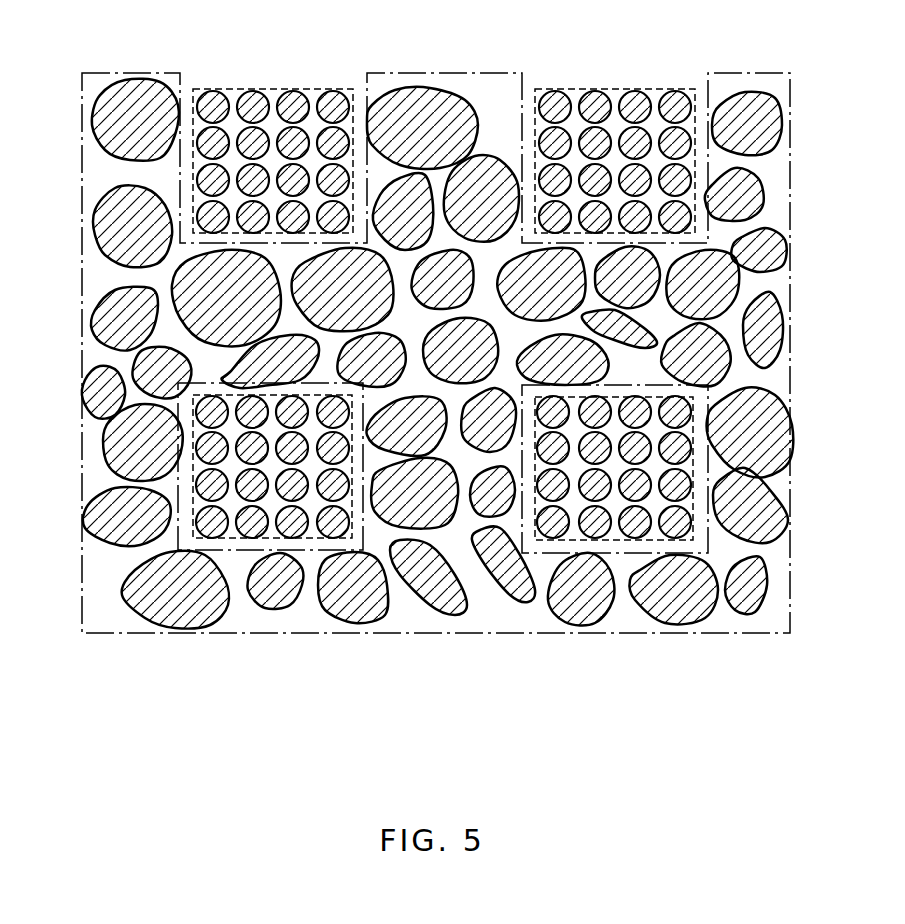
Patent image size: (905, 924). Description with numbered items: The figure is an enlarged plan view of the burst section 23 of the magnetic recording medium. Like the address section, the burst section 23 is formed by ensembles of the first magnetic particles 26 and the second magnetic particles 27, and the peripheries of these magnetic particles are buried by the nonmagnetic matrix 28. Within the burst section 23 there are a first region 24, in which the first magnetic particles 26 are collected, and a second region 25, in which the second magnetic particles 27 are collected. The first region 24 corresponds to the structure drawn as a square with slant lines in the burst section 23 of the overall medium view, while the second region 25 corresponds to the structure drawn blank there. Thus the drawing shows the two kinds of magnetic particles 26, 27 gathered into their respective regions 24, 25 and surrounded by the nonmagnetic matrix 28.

The burst section 23 is at (793, 700).
The first region 24 is at (283, 89).
The second region 25 is at (446, 73).
The first magnetic particles 26 is at (237, 493).
The second magnetic particles 27 is at (413, 607).
The nonmagnetic matrix 28 is at (315, 467).